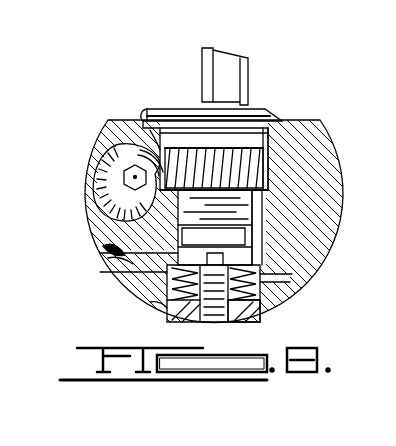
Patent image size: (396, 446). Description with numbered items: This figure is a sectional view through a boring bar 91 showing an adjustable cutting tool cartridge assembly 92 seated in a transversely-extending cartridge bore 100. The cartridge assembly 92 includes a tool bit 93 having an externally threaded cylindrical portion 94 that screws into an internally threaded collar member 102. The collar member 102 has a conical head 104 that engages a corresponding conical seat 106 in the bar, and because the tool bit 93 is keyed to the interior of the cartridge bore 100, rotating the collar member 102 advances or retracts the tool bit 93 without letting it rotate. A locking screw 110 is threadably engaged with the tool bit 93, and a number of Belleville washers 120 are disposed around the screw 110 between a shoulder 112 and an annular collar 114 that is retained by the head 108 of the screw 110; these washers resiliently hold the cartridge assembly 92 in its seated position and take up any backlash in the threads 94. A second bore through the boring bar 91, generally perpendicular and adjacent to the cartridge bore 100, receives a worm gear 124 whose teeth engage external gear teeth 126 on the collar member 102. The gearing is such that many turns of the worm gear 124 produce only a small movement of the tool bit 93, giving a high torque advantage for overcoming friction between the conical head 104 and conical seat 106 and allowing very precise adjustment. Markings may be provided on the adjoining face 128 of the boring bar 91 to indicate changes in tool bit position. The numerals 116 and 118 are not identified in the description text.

The boring bar 91 is at (346, 148).
The tool bit 93 is at (232, 77).
The externally threaded cylindrical portion 94 is at (104, 252).
The adjustable cutting tool cartridge assembly 92 is at (133, 264).
The cartridge bore 100 is at (265, 182).
The internally threaded collar member 102 is at (250, 138).
The conical head 104 is at (180, 121).
The conical seat 106 is at (158, 118).
The head of screw 108 is at (200, 322).
The locking screw 110 is at (245, 324).
The shoulder 112 is at (160, 293).
The annular collar 114 is at (170, 308).
The plunger 116 is at (263, 268).
The channel 118 is at (165, 277).
The Belleville washers 120 is at (258, 280).
The worm gear 124 is at (120, 148).
The external gear teeth 126 is at (272, 130).
The adjoining face 128 is at (96, 213).